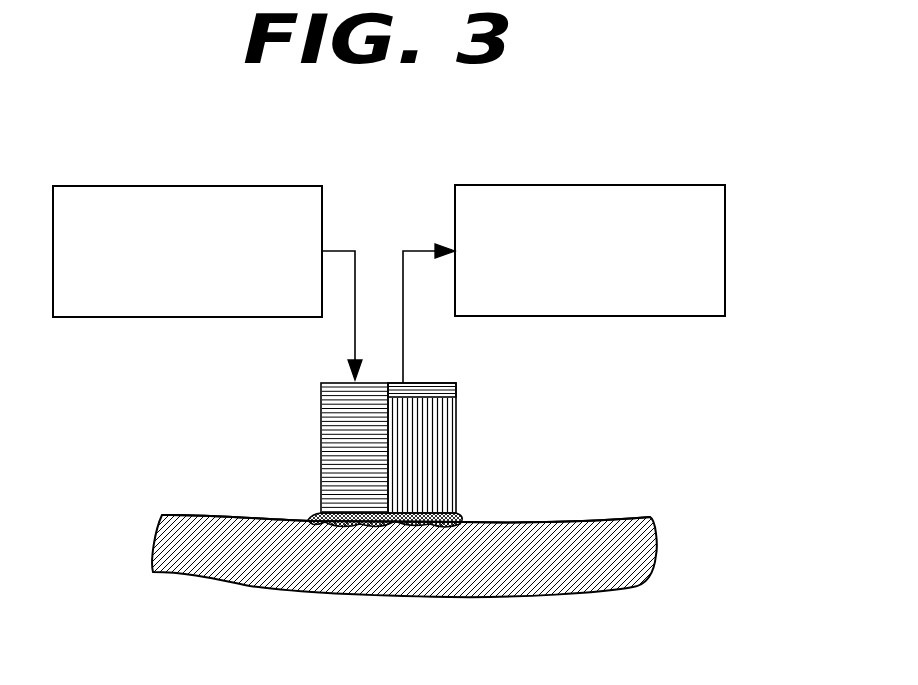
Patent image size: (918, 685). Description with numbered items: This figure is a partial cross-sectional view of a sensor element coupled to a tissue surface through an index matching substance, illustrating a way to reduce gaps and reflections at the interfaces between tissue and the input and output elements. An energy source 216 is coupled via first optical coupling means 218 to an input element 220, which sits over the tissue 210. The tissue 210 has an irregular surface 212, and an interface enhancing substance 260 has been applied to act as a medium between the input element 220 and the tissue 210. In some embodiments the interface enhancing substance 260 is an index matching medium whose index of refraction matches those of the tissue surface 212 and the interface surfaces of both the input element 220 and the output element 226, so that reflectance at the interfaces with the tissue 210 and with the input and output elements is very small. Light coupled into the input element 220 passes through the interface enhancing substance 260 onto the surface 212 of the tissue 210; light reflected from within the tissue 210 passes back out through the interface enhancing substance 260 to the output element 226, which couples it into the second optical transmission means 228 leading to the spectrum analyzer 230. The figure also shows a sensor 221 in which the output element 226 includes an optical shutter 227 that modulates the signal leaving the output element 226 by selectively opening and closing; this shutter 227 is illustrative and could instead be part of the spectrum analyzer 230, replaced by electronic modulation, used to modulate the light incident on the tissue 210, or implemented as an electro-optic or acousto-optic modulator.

The energy source 216 is at (187, 186).
The first optical coupling means 218 is at (339, 251).
The input element 220 is at (357, 412).
The sensor 221 is at (512, 474).
The output element 226 is at (457, 423).
The optical shutter 227 is at (427, 383).
The second optical transmission means 228 is at (420, 251).
The spectrum analyzer 230 is at (673, 185).
The interface enhancing substance 260 is at (317, 512).
The tissue 210 is at (656, 552).
The surface 212 is at (607, 522).